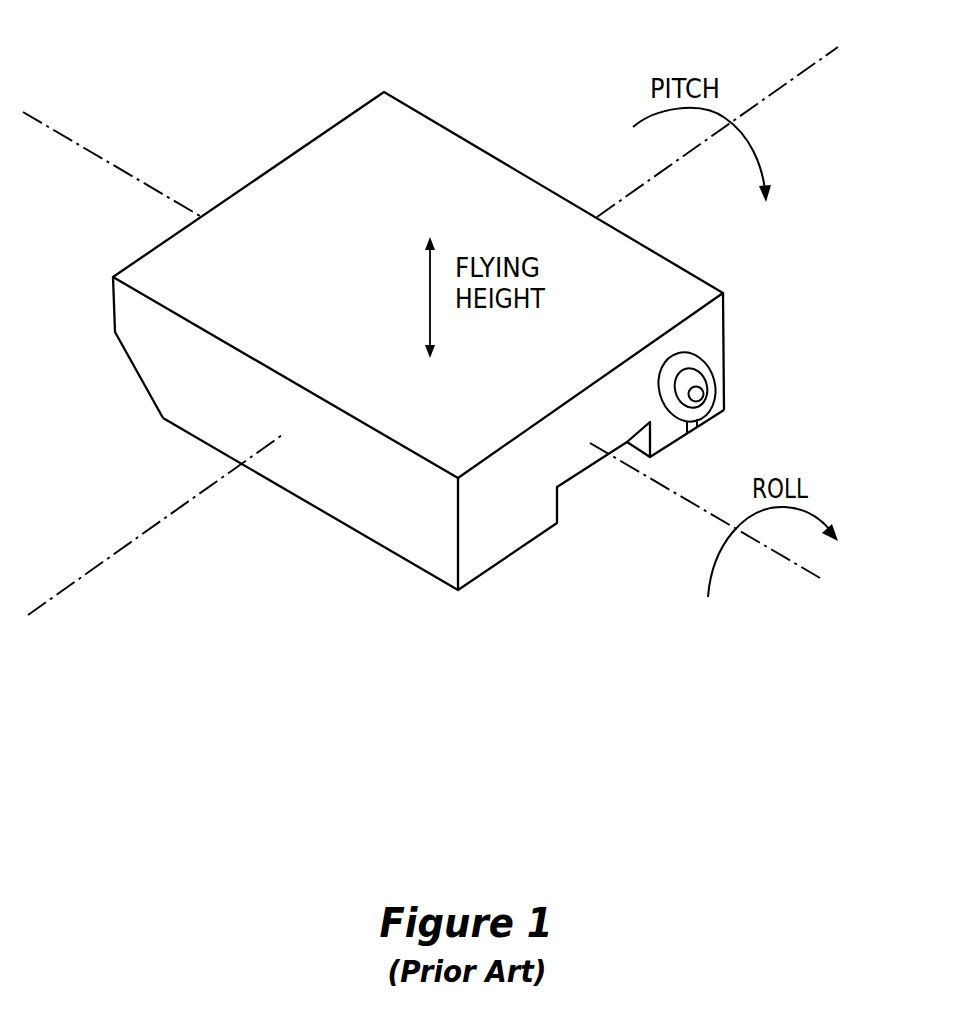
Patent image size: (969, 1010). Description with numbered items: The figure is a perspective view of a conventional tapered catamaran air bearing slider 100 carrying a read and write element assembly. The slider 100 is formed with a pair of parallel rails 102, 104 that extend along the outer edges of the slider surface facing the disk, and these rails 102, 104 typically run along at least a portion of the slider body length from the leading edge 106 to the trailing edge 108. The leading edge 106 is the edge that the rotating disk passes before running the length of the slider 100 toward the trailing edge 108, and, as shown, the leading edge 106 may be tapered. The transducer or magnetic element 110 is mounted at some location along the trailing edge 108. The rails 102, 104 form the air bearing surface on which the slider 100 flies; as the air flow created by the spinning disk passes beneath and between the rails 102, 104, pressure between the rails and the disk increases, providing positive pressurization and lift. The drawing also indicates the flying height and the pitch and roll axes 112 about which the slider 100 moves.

The catamaran slider 100 is at (464, 88).
The rail 102 is at (677, 437).
The rail 104 is at (498, 565).
The leading edge 106 is at (113, 302).
The trailing edge 108 is at (725, 303).
The transducer or magnetic element 110 is at (715, 367).
The axis line 112 is at (42, 117).